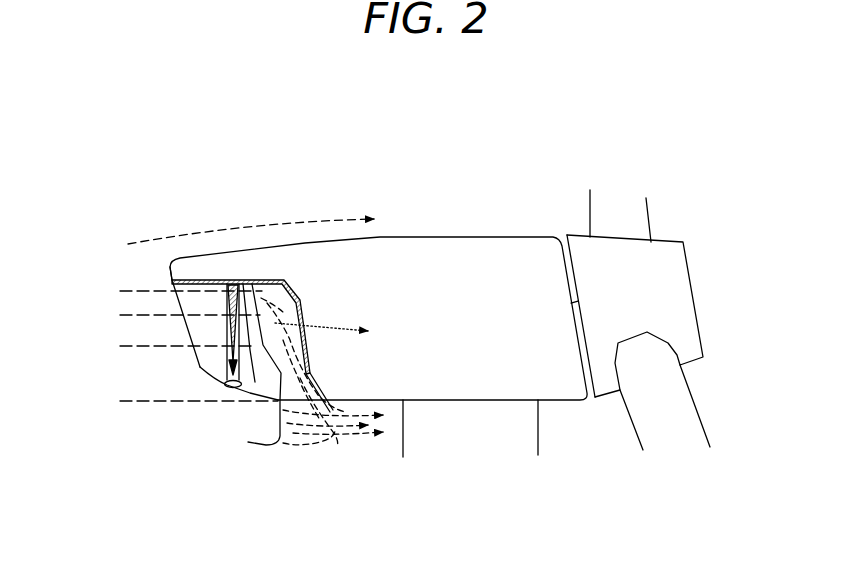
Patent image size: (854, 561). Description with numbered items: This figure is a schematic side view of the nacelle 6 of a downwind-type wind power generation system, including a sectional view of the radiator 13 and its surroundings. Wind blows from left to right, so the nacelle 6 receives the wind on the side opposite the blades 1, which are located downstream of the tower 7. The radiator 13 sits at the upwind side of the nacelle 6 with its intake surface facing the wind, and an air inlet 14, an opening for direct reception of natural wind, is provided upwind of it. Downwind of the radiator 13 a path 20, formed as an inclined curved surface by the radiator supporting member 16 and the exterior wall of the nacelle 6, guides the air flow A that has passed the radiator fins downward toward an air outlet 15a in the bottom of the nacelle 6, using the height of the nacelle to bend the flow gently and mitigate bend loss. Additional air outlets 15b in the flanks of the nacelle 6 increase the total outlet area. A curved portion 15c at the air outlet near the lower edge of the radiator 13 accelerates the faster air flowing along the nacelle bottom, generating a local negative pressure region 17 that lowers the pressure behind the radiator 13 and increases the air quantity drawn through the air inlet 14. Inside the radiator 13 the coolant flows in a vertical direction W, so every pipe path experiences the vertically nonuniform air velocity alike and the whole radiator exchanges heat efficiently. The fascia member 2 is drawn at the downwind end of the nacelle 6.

The blades 1 is at (650, 210).
The bumper fascia 2 is at (694, 296).
The nacelle 6 is at (445, 237).
The tower 7 is at (540, 450).
The radiator 13 is at (200, 367).
The air inlet 14 is at (171, 292).
The air outlet 15a is at (280, 417).
The air outlets 15b is at (300, 335).
The curved portion 15c is at (313, 384).
The radiator supporting member 16 is at (231, 390).
The local negative pressure region 17 is at (332, 438).
The path 20 is at (322, 327).
The direction in which the coolant flows W is at (213, 280).
The air flow A is at (153, 346).